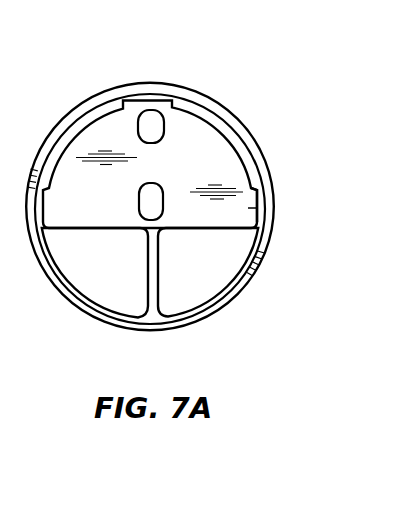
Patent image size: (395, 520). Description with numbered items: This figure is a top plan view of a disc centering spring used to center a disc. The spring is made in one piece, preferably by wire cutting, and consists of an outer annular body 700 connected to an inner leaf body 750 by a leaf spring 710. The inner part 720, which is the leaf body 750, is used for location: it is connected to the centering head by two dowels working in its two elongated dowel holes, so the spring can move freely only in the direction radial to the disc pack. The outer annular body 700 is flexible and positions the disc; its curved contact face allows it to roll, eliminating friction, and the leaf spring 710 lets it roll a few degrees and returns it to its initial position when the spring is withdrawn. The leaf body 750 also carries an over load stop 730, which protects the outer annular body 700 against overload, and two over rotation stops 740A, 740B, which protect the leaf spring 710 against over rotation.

The outer annular body 700 is at (210, 97).
The leaf spring 710 is at (155, 245).
The inner part 720 is at (223, 156).
The over load stop 730 is at (148, 92).
The over rotation stop 740A is at (85, 230).
The over rotation stop 740B is at (255, 208).
The inner leaf body 750 is at (108, 132).